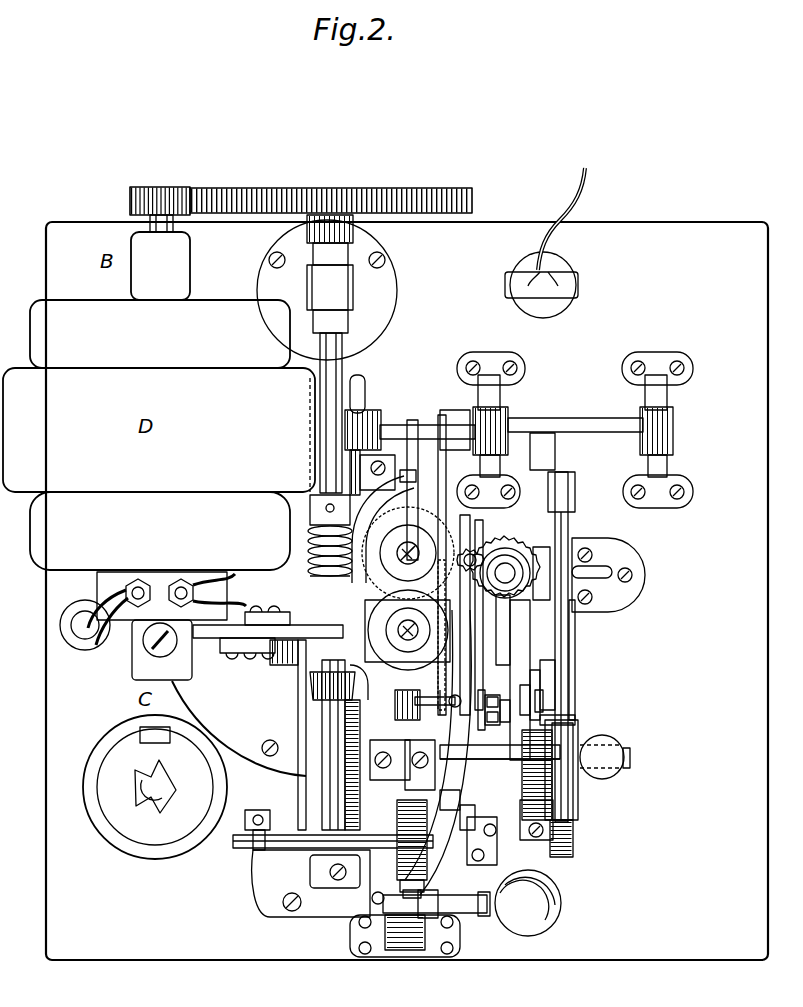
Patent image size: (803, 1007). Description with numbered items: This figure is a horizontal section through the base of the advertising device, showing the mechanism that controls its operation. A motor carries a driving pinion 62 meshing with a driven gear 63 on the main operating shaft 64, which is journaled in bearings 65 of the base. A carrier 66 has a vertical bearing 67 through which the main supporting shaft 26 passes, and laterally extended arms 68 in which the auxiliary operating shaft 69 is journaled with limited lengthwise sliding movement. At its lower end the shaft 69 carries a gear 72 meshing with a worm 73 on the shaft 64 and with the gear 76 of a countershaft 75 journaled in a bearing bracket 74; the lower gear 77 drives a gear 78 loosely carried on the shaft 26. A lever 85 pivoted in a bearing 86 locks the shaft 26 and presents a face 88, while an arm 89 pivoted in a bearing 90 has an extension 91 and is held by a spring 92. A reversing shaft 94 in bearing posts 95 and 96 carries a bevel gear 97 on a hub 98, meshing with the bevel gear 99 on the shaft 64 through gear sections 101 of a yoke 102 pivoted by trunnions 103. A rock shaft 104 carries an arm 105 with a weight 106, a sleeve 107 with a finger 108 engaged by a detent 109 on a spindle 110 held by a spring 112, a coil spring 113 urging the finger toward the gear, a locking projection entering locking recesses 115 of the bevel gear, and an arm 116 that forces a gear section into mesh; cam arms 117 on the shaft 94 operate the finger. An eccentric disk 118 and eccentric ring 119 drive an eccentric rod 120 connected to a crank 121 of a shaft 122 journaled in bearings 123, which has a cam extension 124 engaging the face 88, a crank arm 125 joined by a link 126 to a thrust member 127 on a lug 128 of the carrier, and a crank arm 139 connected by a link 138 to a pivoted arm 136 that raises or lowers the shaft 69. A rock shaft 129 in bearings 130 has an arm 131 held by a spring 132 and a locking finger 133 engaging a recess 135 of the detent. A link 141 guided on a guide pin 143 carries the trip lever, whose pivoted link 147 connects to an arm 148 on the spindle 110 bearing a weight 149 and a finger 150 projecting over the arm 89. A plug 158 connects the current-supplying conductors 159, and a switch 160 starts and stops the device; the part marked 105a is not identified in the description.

The main supporting shaft 26 is at (398, 636).
The driving pinion 62 is at (170, 200).
The driven gear 63 is at (250, 200).
The main operating shaft 64 is at (340, 372).
The bearings 65 is at (342, 290).
The carrier 66 is at (250, 625).
The bearing 67 is at (392, 660).
The laterally extended arms 68 is at (398, 566).
The auxiliary operating shaft 69 is at (418, 565).
The gear 72 is at (420, 500).
The worm 73 is at (310, 540).
The bearing bracket 74 is at (598, 548).
The countershaft 75 is at (568, 612).
The gear 76 is at (520, 600).
The gear 77 is at (548, 560).
The gear 78 is at (530, 700).
The lever 85 is at (352, 480).
The bearing 86 is at (360, 462).
The face 88 is at (365, 385).
The arm 89 is at (575, 720).
The bearing 90 is at (512, 542).
The extension 91 is at (572, 648).
The spring 92 is at (540, 690).
The reversing shaft 94 is at (470, 750).
The bearing post 95 is at (612, 745).
The bearing post 96 is at (448, 705).
The beveled gear 97 is at (324, 720).
The hub 98 is at (440, 705).
The beveled gear 99 is at (320, 700).
The gear sections 101 is at (398, 840).
The yoke 102 is at (402, 698).
The trunnions 103 is at (345, 790).
The rock shaft 104 is at (422, 888).
The arm 105 is at (470, 912).
The valve base 105a is at (405, 950).
The weight 106 is at (548, 928).
The sleeve 107 is at (312, 866).
The finger 108 is at (450, 803).
The detent 109 is at (495, 840).
The spindle 110 is at (553, 800).
The spring 112 is at (490, 855).
The coil spring 113 is at (420, 870).
The locking recesses 115 is at (322, 745).
The arm 116 is at (468, 690).
The cam arms 117 is at (500, 712).
The eccentric disk 118 is at (573, 845).
The eccentric ring 119 is at (575, 740).
The eccentric rod 120 is at (568, 630).
The crank 121 is at (545, 435).
The shaft 122 is at (588, 420).
The bearings 123 is at (497, 420).
The cam extension 124 is at (363, 412).
The crank arm 125 is at (310, 386).
The link 126 is at (310, 505).
The thrust member 127 is at (298, 694).
The lug 128 is at (272, 656).
The rock shaft 129 is at (282, 846).
The bearings 130 is at (240, 848).
The arm 131 is at (345, 770).
The spring 132 is at (426, 665).
The locking finger 133 is at (452, 830).
The recess 135 is at (492, 750).
The pivoted arm 136 is at (472, 545).
The link 138 is at (412, 422).
The crank arm 139 is at (455, 410).
The link 141 is at (505, 660).
The guide pin 143 is at (480, 670).
The pivoted link 147 is at (478, 715).
The arm 148 is at (493, 695).
The weight 149 is at (555, 672).
The finger 150 is at (543, 700).
The plug 158 is at (572, 282).
The current-supplying conductors 159 is at (585, 168).
The switch 160 is at (135, 800).